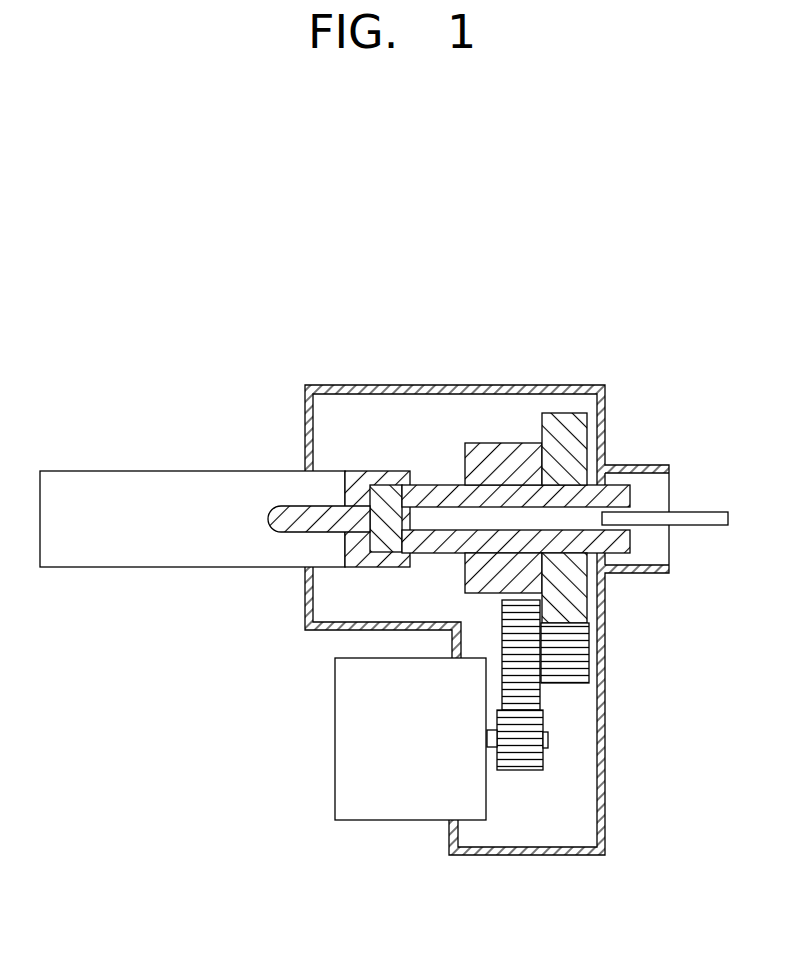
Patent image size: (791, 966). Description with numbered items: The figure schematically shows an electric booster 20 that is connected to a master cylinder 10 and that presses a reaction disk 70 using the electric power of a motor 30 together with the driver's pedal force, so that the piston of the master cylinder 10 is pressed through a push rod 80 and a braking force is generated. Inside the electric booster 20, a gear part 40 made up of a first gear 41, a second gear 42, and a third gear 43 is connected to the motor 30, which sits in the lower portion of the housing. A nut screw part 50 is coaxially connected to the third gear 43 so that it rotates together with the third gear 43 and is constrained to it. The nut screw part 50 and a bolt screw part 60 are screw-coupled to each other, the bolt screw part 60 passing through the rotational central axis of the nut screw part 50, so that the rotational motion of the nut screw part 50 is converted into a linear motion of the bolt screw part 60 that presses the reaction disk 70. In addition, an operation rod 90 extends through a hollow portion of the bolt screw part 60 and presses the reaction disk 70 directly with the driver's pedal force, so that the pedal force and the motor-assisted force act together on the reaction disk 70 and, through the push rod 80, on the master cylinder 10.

The master cylinder 10 is at (100, 555).
The electric booster 20 is at (531, 857).
The motor 30 is at (386, 812).
The gear part 40 is at (623, 534).
The first gear 41 is at (537, 725).
The second gear 42 is at (598, 652).
The third gear 43 is at (566, 430).
The nut screw part 50 is at (508, 452).
The bolt screw part 60 is at (435, 493).
The reaction disk 70 is at (375, 480).
The push rod 80 is at (270, 513).
The operation rod 90 is at (708, 512).